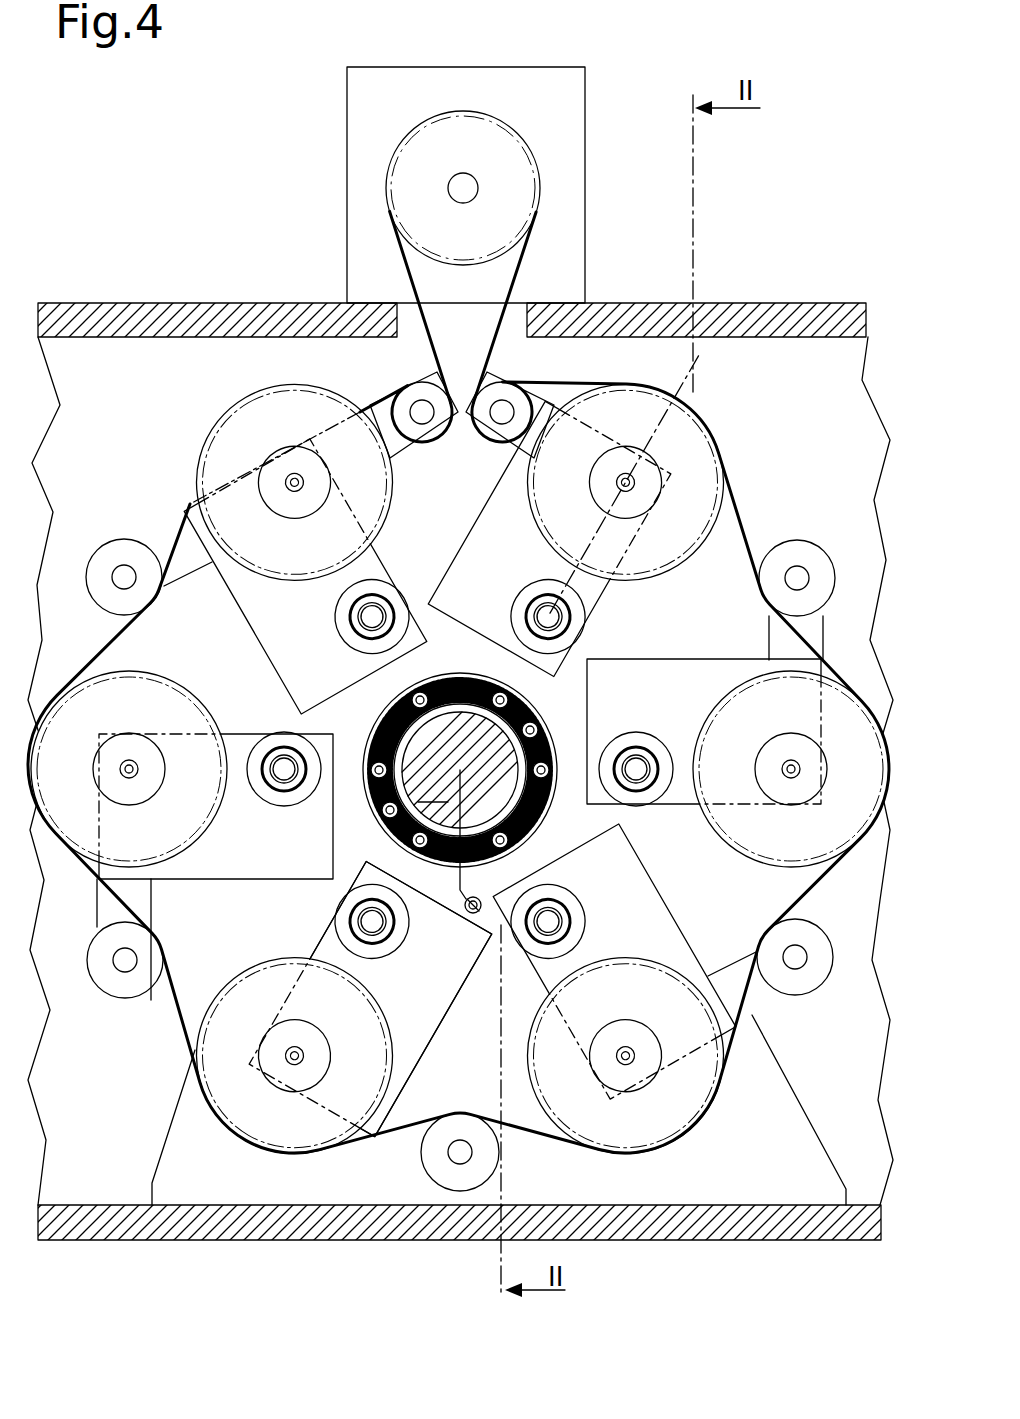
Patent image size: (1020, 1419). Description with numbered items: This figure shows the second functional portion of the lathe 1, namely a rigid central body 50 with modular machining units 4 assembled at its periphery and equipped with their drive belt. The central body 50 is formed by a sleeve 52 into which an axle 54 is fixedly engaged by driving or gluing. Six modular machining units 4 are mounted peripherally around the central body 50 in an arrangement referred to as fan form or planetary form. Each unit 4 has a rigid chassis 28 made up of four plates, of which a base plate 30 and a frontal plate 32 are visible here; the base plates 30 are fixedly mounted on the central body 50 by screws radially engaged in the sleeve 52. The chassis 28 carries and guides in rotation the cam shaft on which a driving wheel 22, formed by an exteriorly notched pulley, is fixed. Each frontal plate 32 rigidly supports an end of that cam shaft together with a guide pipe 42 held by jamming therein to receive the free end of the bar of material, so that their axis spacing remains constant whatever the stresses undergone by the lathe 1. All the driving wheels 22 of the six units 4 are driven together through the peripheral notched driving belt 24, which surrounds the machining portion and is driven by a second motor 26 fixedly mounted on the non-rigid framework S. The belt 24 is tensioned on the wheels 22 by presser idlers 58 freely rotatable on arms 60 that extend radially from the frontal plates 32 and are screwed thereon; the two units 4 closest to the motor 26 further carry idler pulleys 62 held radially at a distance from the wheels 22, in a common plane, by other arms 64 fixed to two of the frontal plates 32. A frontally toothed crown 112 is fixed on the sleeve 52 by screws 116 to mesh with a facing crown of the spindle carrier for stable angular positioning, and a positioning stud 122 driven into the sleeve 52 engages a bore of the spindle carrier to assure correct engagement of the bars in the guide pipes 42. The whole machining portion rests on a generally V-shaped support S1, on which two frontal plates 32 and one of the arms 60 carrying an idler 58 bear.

The lathe 1 is at (146, 262).
The modular machining unit 4 is at (172, 415).
The driving wheel 22 is at (735, 505).
The driving belt 24 is at (550, 270).
The second motor 26 is at (553, 146).
The rigid chassis 28 is at (184, 496).
The base plate 30 is at (530, 1112).
The frontal plate 32 is at (398, 998).
The guide pipe 42 is at (652, 792).
The rigid central body 50 is at (273, 710).
The sleeve 52 is at (192, 1003).
The axle 54 is at (395, 840).
The presser idler 58 is at (102, 552).
The arm 60 is at (163, 540).
The idler pulley 62 is at (438, 390).
The arm 64 is at (370, 402).
The crown 112 is at (557, 747).
The screw 116 is at (352, 800).
The positioning stud 122 is at (482, 893).
The non-rigid framework S is at (790, 322).
The support S1 is at (715, 1228).